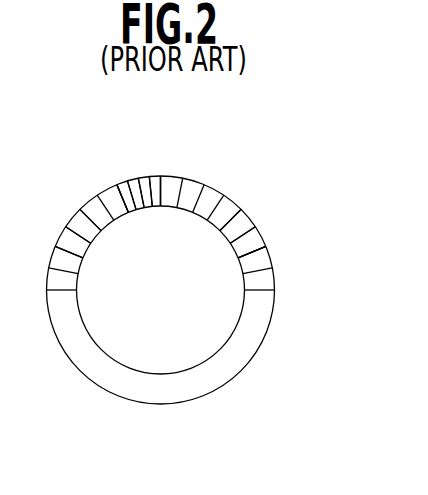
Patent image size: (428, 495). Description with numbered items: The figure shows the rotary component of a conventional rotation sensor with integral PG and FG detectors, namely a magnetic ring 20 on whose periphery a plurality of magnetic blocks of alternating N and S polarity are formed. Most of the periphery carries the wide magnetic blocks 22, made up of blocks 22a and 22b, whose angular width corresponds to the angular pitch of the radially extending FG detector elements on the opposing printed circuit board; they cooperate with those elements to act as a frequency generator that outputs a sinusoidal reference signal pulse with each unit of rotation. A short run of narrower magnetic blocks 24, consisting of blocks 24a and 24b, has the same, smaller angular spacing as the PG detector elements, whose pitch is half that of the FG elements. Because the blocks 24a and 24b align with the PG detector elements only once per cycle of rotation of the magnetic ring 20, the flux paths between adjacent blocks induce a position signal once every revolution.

The magnetic ring 20 is at (239, 173).
The magnetic blocks 22 is at (255, 195).
The magnetic block 22a is at (262, 222).
The magnetic block 22b is at (265, 243).
The magnetic blocks 24 is at (166, 158).
The magnetic block 24a is at (150, 176).
The magnetic block 24b is at (166, 176).